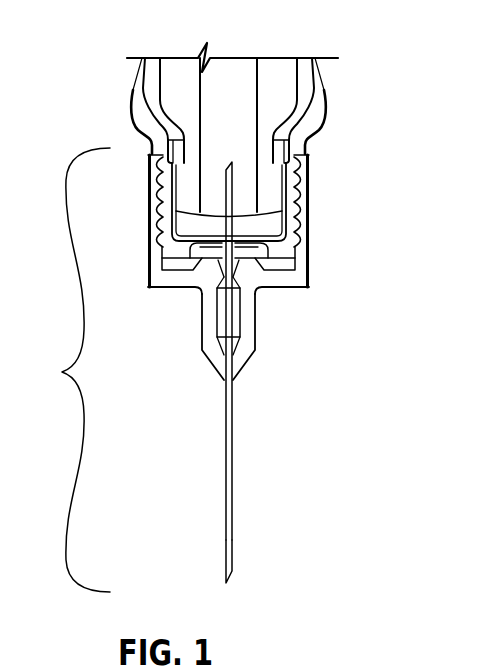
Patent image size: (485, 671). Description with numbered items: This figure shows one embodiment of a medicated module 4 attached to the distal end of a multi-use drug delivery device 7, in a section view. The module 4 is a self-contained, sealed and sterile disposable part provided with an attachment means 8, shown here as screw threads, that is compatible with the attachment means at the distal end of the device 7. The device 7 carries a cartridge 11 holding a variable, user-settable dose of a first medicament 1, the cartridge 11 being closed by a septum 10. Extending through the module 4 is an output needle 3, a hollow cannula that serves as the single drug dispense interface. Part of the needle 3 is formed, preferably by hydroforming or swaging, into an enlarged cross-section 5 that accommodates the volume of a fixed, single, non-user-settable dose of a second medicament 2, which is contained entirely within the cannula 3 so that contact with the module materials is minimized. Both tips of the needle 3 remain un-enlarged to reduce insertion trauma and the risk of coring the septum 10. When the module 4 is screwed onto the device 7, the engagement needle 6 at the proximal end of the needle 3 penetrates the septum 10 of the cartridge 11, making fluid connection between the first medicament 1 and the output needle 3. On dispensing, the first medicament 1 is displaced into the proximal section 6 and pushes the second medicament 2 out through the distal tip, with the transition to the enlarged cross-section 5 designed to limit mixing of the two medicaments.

The first medicament 1 is at (278, 77).
The second medicament 2 is at (228, 343).
The output needle 3 is at (240, 541).
The medicated module 4 is at (73, 370).
The enlarged cross-section 5 is at (240, 316).
The engagement needle 6 is at (233, 190).
The drug delivery device 7 is at (305, 133).
The attachment means 8 is at (303, 229).
The septum 10 is at (264, 226).
The cartridge 11 is at (304, 63).